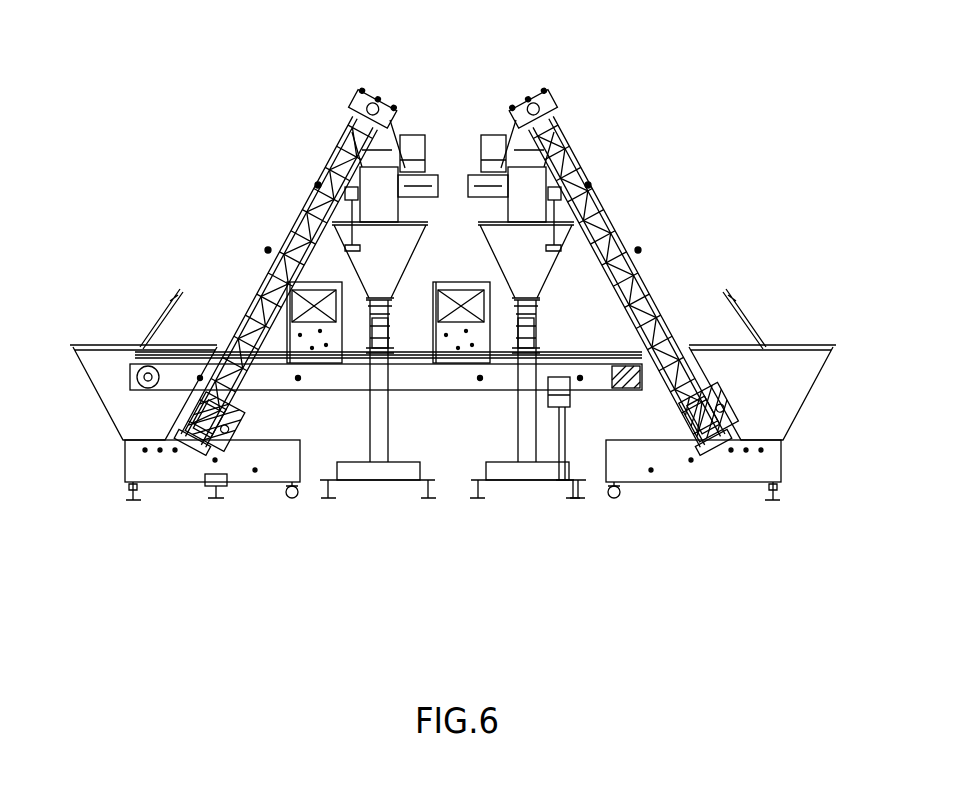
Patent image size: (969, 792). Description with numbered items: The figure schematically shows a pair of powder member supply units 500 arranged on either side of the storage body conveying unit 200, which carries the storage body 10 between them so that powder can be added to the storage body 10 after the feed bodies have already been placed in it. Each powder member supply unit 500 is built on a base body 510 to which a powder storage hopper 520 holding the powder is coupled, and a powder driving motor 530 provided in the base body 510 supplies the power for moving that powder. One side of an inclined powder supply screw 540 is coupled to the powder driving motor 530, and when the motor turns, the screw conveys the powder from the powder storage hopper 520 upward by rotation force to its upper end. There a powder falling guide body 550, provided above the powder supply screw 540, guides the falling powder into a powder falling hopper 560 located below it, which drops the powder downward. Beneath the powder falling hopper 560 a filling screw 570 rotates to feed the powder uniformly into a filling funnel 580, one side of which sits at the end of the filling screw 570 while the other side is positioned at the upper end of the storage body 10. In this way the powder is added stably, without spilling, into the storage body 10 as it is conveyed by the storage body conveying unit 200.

The powder member supply unit 500 is at (200, 118).
The storage body 10 is at (495, 370).
The storage body conveying unit 200 is at (607, 390).
The base body 510 is at (169, 480).
The powder storage hopper 520 is at (110, 372).
The powder driving motor 530 is at (228, 418).
The powder supply screw 540 is at (285, 242).
The powder falling guide body 550 is at (358, 118).
The powder falling hopper 560 is at (318, 185).
The filling screw 570 is at (352, 306).
The filling funnel 580 is at (372, 330).